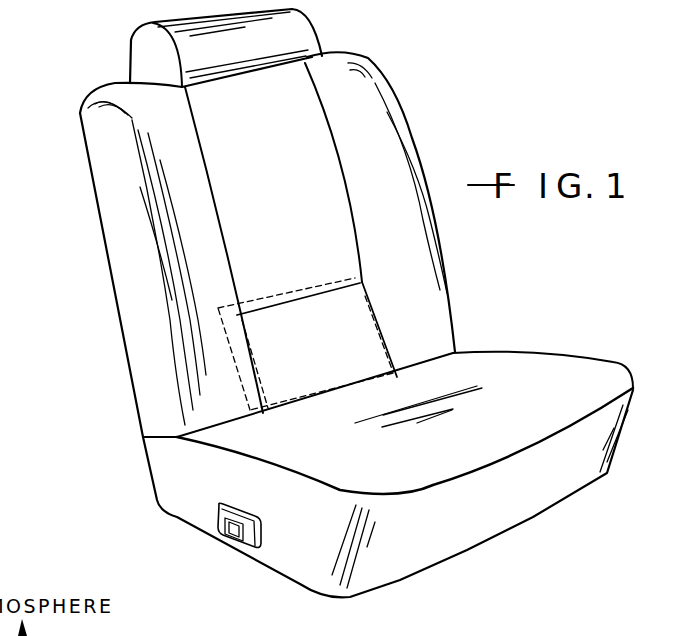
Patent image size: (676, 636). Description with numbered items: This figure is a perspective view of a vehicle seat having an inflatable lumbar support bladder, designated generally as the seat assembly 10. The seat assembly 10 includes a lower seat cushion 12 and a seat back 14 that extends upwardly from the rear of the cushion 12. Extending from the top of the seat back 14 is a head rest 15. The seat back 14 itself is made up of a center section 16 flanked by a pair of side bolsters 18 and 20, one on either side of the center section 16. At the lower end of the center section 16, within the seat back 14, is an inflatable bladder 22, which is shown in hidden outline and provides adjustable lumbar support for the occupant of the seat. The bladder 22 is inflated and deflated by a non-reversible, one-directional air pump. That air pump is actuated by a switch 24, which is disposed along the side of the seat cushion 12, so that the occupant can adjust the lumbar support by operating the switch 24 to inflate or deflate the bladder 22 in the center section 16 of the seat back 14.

The seat assembly 10 is at (113, 408).
The lower seat cushion 12 is at (298, 553).
The seat back 14 is at (106, 267).
The head rest 15 is at (147, 54).
The center section 16 is at (294, 190).
The side bolster 18 is at (382, 168).
The side bolster 20 is at (117, 187).
The inflatable bladder 22 is at (311, 282).
The switch 24 is at (217, 528).